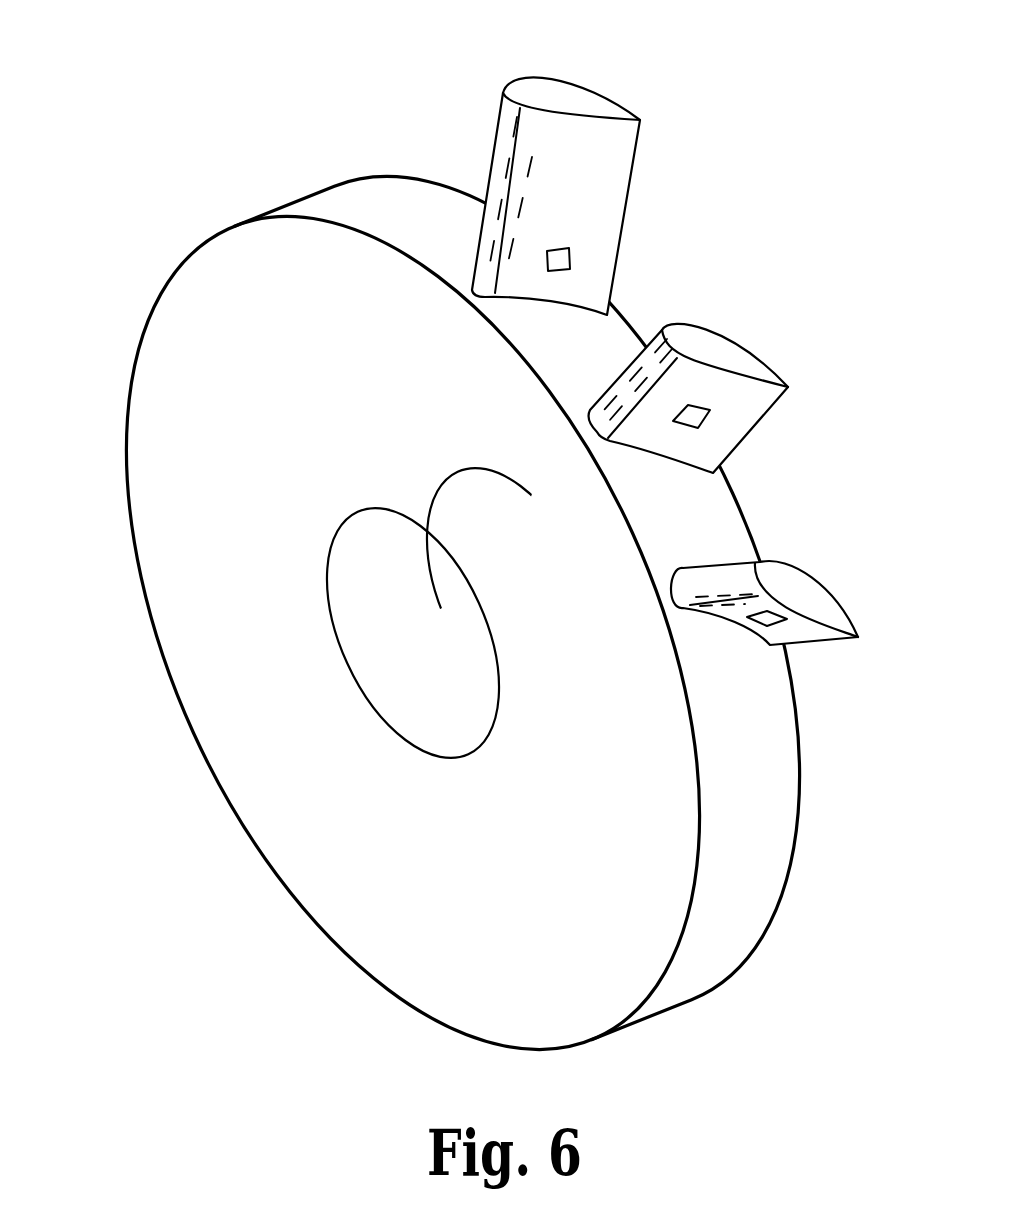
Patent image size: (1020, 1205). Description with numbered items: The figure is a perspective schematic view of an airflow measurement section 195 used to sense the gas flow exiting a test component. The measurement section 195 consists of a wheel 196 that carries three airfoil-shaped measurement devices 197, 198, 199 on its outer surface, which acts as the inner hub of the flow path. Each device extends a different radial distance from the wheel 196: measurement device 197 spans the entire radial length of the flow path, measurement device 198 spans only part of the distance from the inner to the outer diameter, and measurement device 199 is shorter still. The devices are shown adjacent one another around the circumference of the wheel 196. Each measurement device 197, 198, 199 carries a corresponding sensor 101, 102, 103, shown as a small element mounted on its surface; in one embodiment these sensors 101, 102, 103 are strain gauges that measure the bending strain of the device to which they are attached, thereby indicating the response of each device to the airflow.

The measurement section 195 is at (287, 138).
The wheel 196 is at (167, 350).
The measurement device 197 is at (576, 84).
The measurement device 198 is at (757, 347).
The measurement device 199 is at (823, 582).
The sensor 101 is at (570, 260).
The sensor 102 is at (697, 423).
The sensor 103 is at (763, 623).